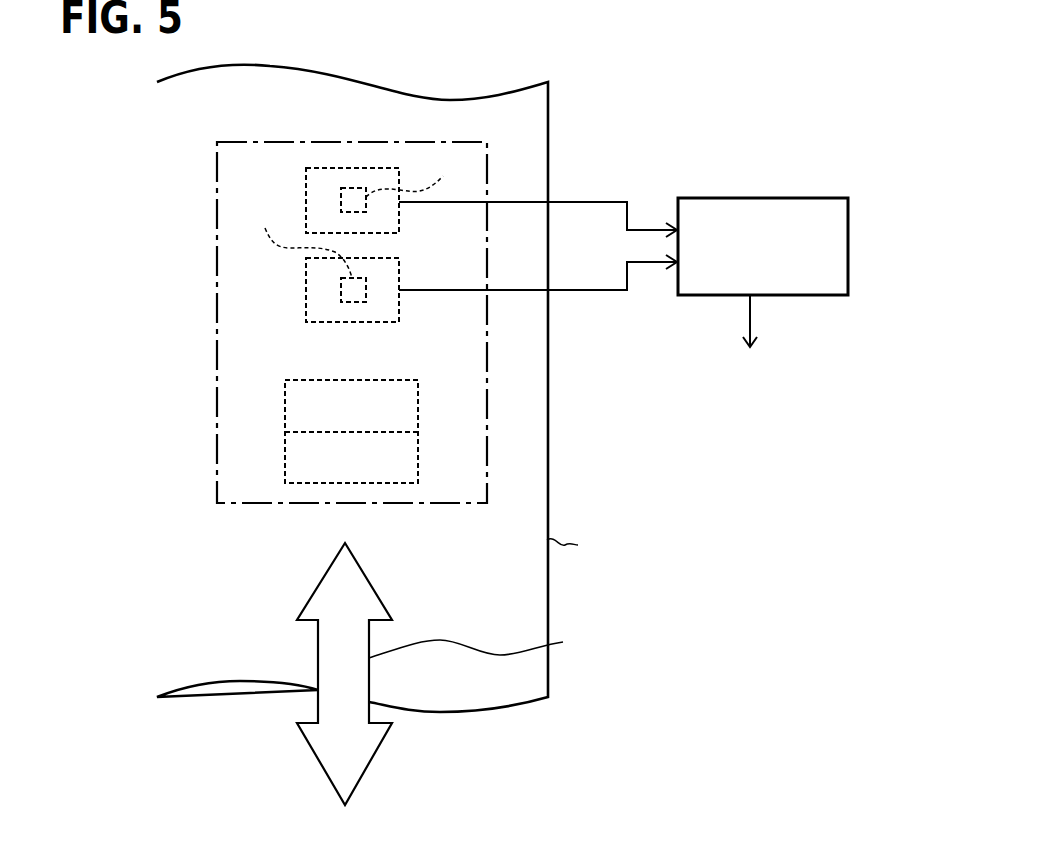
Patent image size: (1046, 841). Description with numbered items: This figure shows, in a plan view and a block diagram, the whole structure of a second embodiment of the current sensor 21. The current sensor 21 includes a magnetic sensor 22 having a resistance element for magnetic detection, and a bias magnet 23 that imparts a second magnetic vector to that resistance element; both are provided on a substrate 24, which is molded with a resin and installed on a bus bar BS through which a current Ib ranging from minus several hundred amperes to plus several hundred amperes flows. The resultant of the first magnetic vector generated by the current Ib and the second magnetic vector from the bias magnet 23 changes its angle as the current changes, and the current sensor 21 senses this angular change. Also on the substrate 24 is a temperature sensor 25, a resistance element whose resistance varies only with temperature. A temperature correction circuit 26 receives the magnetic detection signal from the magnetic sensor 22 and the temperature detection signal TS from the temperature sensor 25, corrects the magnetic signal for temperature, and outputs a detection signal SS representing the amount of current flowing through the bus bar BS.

The current sensor 21 is at (512, 435).
The magnetic sensor 22 is at (306, 292).
The bias magnet 23 is at (399, 380).
The substrate 24 is at (217, 330).
The temperature sensor 25 is at (348, 168).
The temperature correction circuit 26 is at (752, 198).